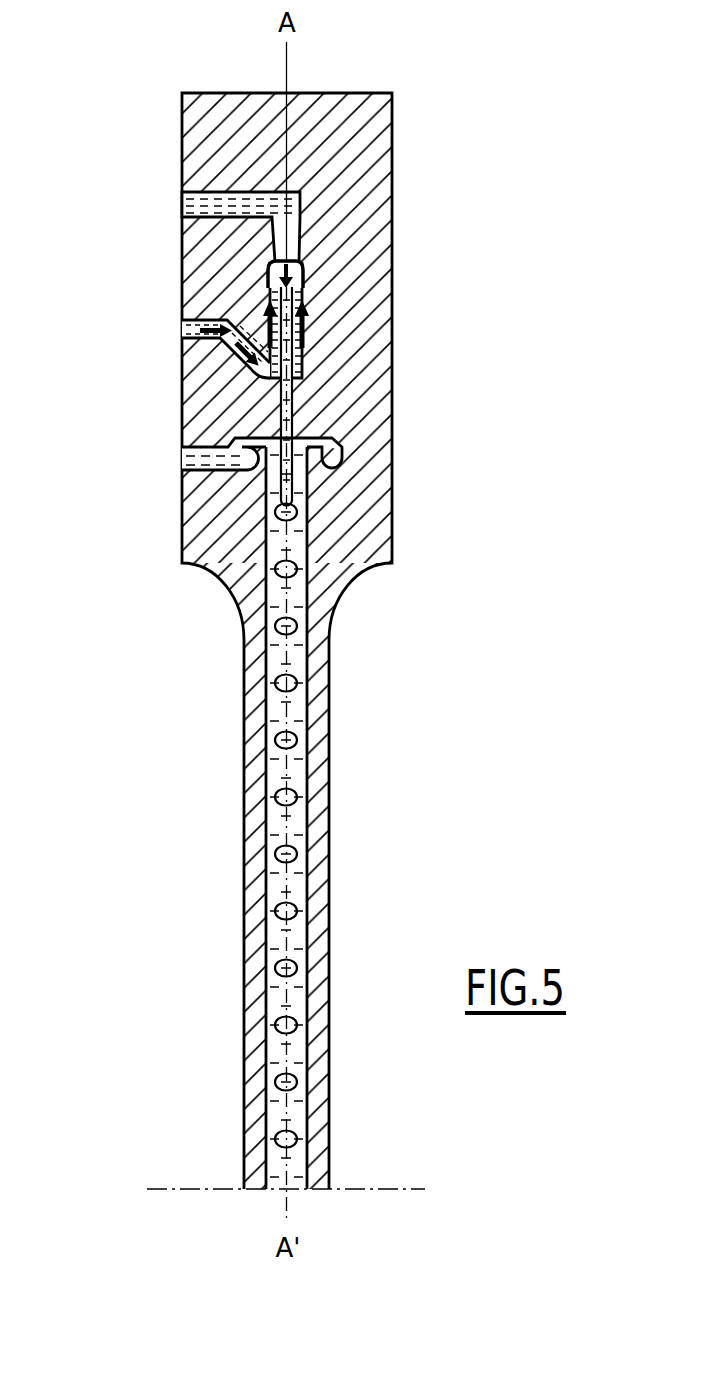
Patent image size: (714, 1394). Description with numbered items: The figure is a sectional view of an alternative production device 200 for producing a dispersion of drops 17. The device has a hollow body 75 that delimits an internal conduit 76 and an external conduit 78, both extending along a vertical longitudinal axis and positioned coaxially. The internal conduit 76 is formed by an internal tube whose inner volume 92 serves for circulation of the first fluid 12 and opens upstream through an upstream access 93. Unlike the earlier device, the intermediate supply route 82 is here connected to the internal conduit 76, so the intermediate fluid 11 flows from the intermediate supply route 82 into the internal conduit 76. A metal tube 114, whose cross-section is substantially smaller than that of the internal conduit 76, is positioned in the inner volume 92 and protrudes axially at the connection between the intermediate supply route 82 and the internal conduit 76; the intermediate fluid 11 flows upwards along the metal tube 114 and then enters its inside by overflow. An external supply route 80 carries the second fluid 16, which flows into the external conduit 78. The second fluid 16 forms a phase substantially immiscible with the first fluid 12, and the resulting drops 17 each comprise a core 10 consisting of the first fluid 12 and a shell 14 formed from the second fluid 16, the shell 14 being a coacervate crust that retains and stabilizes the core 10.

The hollow body 75 is at (142, 172).
The production device 200 is at (438, 337).
The first fluid 12 is at (250, 208).
The upstream access 93 is at (217, 208).
The internal conduit 76 is at (293, 212).
The inner volume 92 is at (292, 242).
The intermediate fluid 11 is at (203, 328).
The intermediate supply route 82 is at (182, 333).
The metal tube 114 is at (305, 405).
The second fluid 16 is at (200, 458).
The external supply route 80 is at (348, 460).
The external conduit 78 is at (298, 768).
The shell 14 is at (276, 686).
The core 10 is at (277, 687).
The drops 17 is at (282, 697).